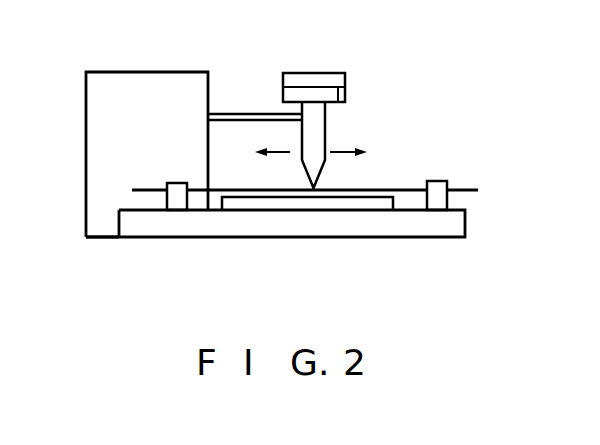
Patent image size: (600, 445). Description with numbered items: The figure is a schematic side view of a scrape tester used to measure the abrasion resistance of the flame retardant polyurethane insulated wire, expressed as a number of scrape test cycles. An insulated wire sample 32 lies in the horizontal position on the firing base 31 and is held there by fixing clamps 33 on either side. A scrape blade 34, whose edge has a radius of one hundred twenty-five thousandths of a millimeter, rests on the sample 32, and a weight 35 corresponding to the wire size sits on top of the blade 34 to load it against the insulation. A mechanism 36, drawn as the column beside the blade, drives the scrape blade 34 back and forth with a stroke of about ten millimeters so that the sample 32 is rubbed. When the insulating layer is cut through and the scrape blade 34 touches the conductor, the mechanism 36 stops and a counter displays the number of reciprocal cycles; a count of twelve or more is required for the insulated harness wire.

The firing base 31 is at (332, 228).
The insulated wire sample 32 is at (401, 188).
The fixing clamps 33 is at (180, 192).
The scrape blade 34 is at (320, 127).
The weight 35 is at (313, 78).
The mechanism 36 is at (132, 82).